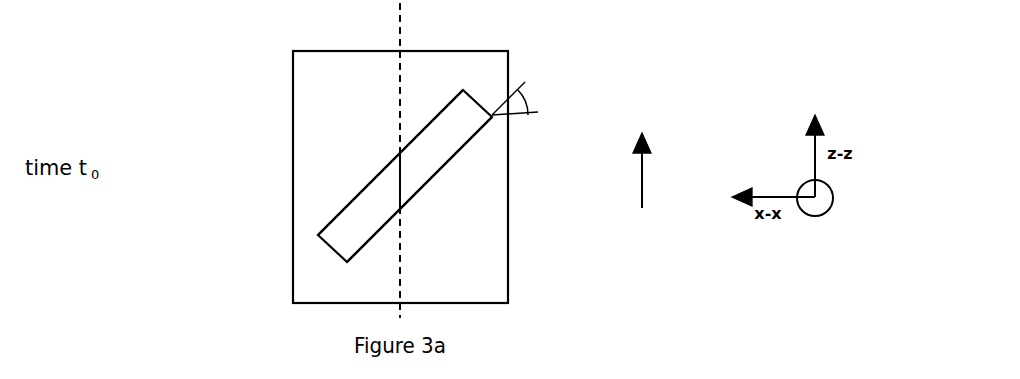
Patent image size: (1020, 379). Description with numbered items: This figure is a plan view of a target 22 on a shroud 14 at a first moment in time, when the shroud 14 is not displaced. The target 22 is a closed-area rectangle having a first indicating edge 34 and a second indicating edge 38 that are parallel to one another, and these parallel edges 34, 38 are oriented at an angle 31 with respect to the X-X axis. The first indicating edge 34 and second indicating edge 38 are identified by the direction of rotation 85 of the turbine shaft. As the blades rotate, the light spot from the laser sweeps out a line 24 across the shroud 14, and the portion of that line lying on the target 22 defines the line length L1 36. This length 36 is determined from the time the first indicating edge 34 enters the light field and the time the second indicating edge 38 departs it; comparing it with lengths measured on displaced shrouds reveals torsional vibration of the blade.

The shroud 14 is at (293, 245).
The target 22 is at (440, 160).
The line 24 is at (403, 24).
The angle 31 is at (528, 97).
The first indicating edge 34 is at (365, 185).
The line length L1 36 is at (399, 185).
The second indicating edge 38 is at (378, 230).
The direction of rotation 85 is at (657, 170).